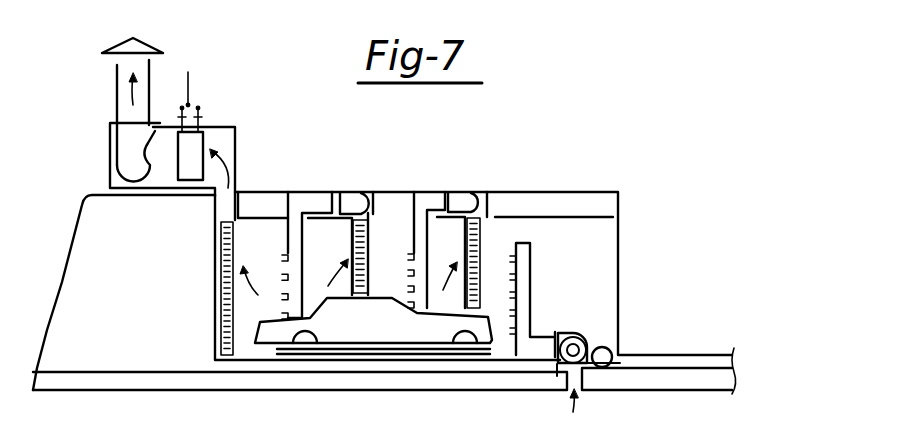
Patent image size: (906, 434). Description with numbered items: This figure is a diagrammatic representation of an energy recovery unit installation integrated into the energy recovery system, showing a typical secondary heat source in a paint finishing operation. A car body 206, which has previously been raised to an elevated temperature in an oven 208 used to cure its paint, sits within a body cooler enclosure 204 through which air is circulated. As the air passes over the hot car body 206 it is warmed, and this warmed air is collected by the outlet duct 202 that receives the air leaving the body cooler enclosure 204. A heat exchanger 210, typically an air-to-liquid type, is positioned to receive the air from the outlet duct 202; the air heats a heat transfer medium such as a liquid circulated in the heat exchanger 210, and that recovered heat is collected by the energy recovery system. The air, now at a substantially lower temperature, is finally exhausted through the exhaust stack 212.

The outlet duct 202 is at (237, 188).
The body cooler enclosure 204 is at (383, 227).
The car body 206 is at (383, 337).
The oven 208 is at (158, 311).
The heat exchanger 210 is at (197, 140).
The exhaust stack 212 is at (142, 67).